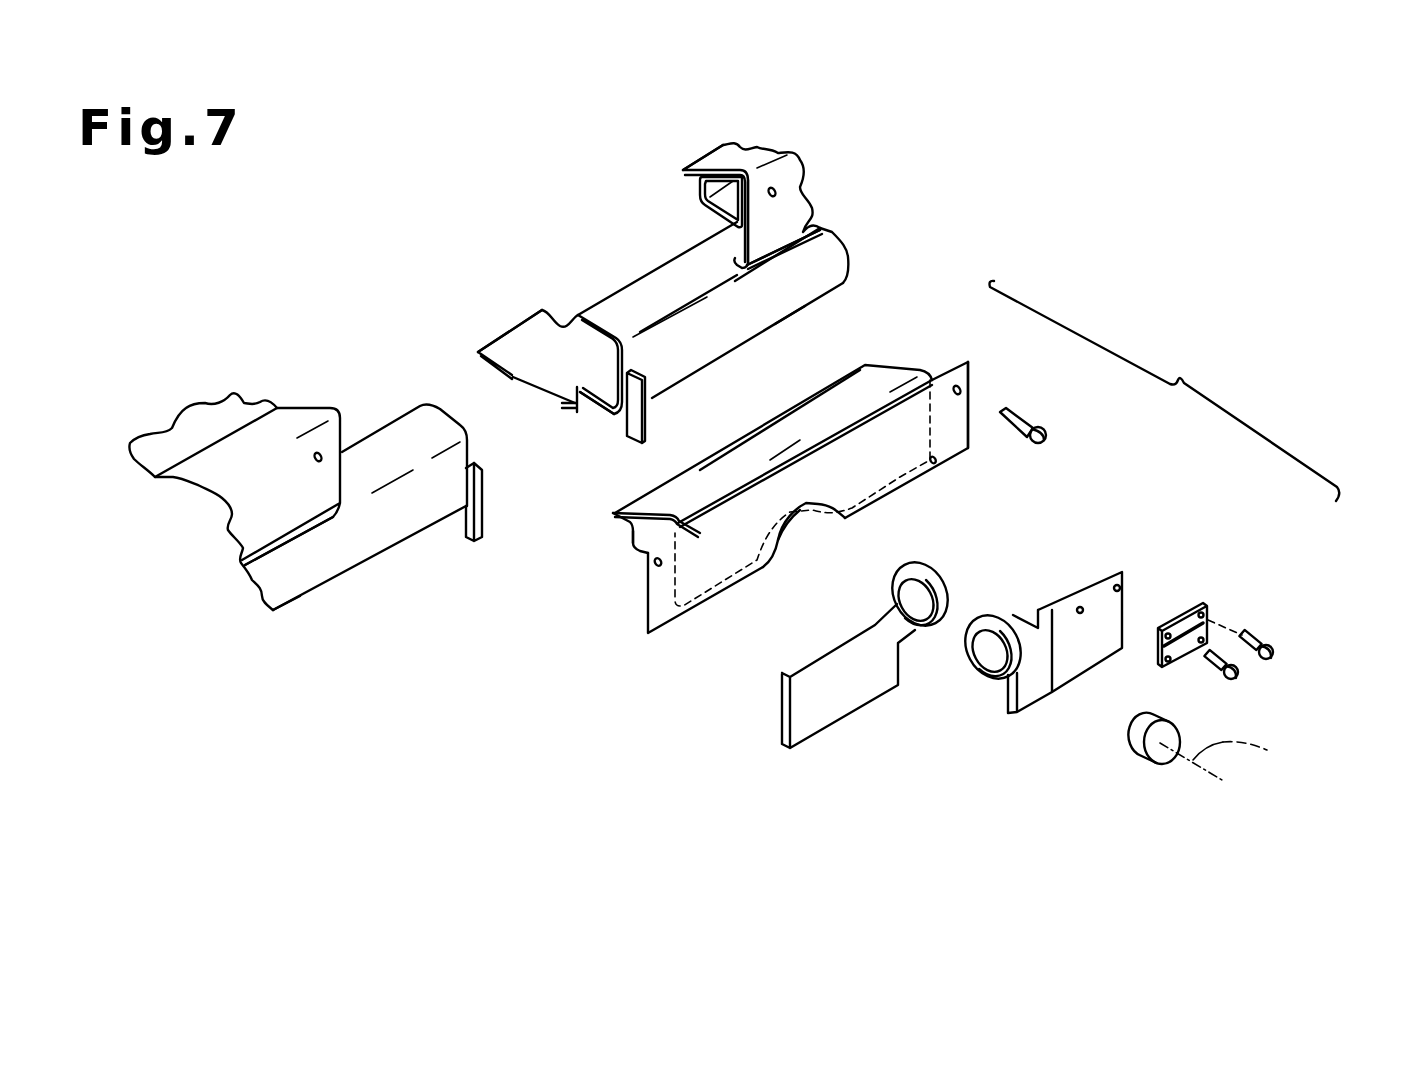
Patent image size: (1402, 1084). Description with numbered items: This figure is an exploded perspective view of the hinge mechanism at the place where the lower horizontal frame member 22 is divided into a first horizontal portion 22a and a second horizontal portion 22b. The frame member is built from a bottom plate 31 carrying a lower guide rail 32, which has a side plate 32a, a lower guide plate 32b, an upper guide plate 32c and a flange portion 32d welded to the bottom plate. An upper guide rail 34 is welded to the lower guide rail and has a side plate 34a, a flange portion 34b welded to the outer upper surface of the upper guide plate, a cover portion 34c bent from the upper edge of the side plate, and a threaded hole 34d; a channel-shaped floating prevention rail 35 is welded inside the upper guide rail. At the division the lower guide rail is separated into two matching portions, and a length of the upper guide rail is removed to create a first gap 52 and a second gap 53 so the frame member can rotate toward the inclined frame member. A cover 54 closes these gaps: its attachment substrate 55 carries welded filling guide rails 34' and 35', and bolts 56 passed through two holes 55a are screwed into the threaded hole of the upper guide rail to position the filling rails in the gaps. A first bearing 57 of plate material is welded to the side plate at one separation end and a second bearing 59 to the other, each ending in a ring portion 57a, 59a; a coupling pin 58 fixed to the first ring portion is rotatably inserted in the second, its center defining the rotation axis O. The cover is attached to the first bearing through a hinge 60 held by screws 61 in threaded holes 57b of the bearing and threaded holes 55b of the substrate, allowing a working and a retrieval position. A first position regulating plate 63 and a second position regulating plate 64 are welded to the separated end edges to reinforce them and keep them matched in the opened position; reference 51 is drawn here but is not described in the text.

The lower horizontal frame member 22 is at (349, 571).
The first horizontal portion 22a is at (287, 610).
The second horizontal portion 22b is at (785, 309).
The bottom plate 31 is at (248, 405).
The lower guide rail 32 is at (398, 530).
The side plate 32a is at (263, 587).
The lower guide plate 32b is at (605, 392).
The upper guide plate 32c is at (542, 310).
The flange portion 32d is at (570, 400).
The upper guide rail 34 is at (488, 323).
The side plate 34a is at (833, 246).
The flange portion 34b is at (740, 268).
The cover portion 34c is at (753, 152).
The threaded hole 34d is at (776, 192).
The filling guide rail 34' is at (826, 387).
The floating prevention rail 35 is at (679, 199).
The filling guide rail 35' is at (586, 554).
The lock assembly 51 is at (1165, 391).
The first gap 52 is at (382, 445).
The second gap 53 is at (677, 275).
The cover 54 is at (974, 395).
The attachment substrate 55 is at (960, 467).
The hole 55a is at (968, 366).
The threaded hole 55b is at (903, 480).
The bolt 56 is at (1022, 423).
The first bearing 57 is at (1063, 673).
The first ring portion 57a is at (1003, 683).
The threaded hole 57b is at (1102, 577).
The coupling pin 58 is at (1138, 752).
The second bearing 59 is at (852, 703).
The second ring portion 59a is at (925, 615).
The hinge 60 is at (1210, 603).
The screw 61 is at (1253, 633).
The first position regulating plate 63 is at (453, 520).
The second position regulating plate 64 is at (642, 418).
The rotation axis O is at (1227, 756).